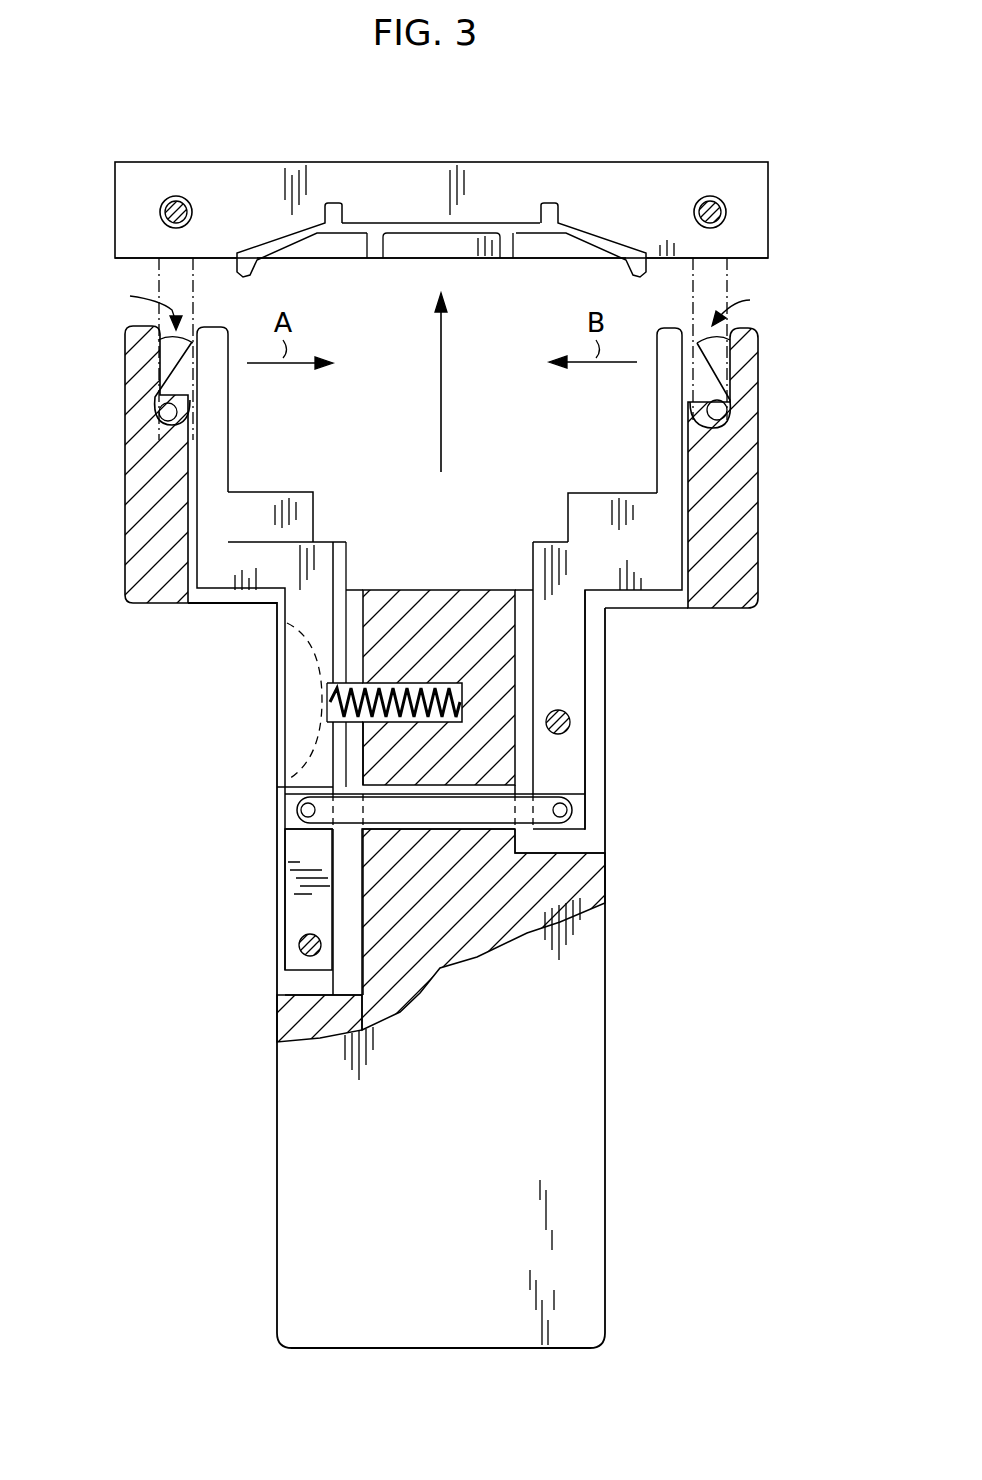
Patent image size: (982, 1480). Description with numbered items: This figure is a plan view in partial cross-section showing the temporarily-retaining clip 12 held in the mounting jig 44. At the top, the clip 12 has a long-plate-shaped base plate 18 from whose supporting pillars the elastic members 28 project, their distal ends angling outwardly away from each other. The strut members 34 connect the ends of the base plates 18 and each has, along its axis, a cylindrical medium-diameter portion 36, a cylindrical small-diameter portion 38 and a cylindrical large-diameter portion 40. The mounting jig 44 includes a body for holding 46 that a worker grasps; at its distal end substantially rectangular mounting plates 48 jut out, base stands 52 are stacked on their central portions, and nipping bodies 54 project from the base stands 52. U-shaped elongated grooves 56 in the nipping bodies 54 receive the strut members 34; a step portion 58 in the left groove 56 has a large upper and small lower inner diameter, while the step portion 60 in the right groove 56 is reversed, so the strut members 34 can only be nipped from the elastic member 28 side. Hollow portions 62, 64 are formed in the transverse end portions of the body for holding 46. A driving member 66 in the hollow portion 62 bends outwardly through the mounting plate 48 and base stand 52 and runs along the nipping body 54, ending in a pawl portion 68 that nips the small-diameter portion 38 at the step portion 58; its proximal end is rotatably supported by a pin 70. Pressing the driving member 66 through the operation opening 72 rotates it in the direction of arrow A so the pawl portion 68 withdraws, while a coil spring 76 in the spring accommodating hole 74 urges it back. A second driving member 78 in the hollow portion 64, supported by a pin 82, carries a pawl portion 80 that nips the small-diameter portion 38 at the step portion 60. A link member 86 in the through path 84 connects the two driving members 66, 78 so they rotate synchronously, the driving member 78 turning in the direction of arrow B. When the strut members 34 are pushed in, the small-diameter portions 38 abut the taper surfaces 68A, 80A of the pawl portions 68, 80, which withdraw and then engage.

The temporarily-retaining clip 12 is at (783, 227).
The base plate 18 is at (497, 165).
The elastic member 28 is at (293, 259).
The strut member 34 is at (190, 198).
The medium-diameter portion 36 is at (193, 210).
The small-diameter portion 38 is at (174, 197).
The large-diameter portion 40 is at (728, 213).
The mounting jig 44 is at (675, 917).
The body for holding 46 is at (605, 1055).
The mounting plate 48 is at (232, 597).
The base stand 52 is at (265, 500).
The nipping body 54 is at (135, 420).
The elongated groove 56 is at (440, 302).
The step portion 58 is at (163, 416).
The step portion 60 is at (745, 410).
The hollow portion 62 is at (300, 985).
The hollow portion 64 is at (600, 822).
The driving member 66 is at (300, 850).
The pawl portion 68 is at (155, 373).
The taper surface 68A is at (153, 357).
The pin 70 is at (300, 938).
The operation opening 72 is at (300, 674).
The spring accommodating hole 74 is at (428, 683).
The coil spring 76 is at (397, 683).
The driving member 78 is at (580, 690).
The pawl portion 80 is at (735, 362).
The taper surface 80A is at (722, 343).
The pin 82 is at (570, 727).
The through path 84 is at (492, 830).
The link member 86 is at (432, 815).